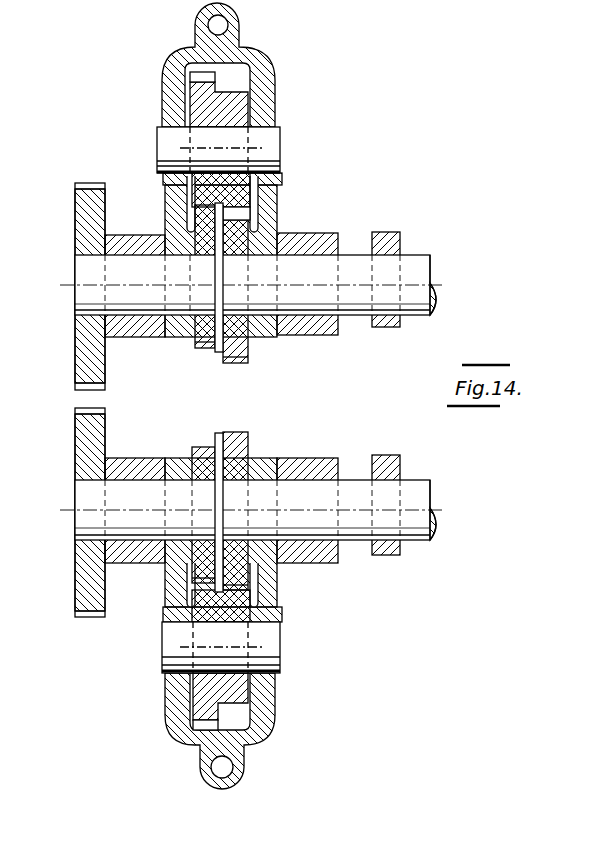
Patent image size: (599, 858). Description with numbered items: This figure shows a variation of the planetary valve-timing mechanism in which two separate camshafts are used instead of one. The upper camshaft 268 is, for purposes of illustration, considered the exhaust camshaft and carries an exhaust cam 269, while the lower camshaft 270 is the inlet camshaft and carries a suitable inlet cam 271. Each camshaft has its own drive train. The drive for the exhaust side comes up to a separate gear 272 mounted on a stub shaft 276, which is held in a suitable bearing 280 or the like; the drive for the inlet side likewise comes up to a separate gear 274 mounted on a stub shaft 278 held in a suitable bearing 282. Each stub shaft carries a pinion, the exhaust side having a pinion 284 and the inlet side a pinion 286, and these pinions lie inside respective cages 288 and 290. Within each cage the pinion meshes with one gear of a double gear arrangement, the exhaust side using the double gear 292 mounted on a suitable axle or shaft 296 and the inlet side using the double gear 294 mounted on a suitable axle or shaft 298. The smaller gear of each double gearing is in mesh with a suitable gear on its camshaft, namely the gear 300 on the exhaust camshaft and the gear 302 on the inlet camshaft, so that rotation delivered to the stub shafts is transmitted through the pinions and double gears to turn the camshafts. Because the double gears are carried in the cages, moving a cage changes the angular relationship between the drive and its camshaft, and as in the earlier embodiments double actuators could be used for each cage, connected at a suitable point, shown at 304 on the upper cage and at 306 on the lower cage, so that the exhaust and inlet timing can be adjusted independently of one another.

The exhaust camshaft 268 is at (420, 268).
The exhaust cam 269 is at (390, 237).
The inlet camshaft 270 is at (420, 495).
The inlet cam 271 is at (390, 462).
The gear 272 is at (85, 213).
The gear 274 is at (85, 444).
The stub shaft 276 is at (85, 275).
The stub shaft 278 is at (88, 503).
The bearing 280 is at (128, 240).
The bearing 282 is at (125, 460).
The pinion 284 is at (207, 335).
The pinion 286 is at (200, 455).
The cage 288 is at (268, 80).
The cage 290 is at (268, 715).
The double gear arrangement 292 is at (249, 118).
The double gear arrangement 294 is at (232, 608).
The axle or shaft 296 is at (265, 152).
The axle or shaft 298 is at (272, 650).
The gear 300 is at (243, 350).
The gear 302 is at (245, 452).
The connection point 304 is at (226, 21).
The connection point 306 is at (222, 776).